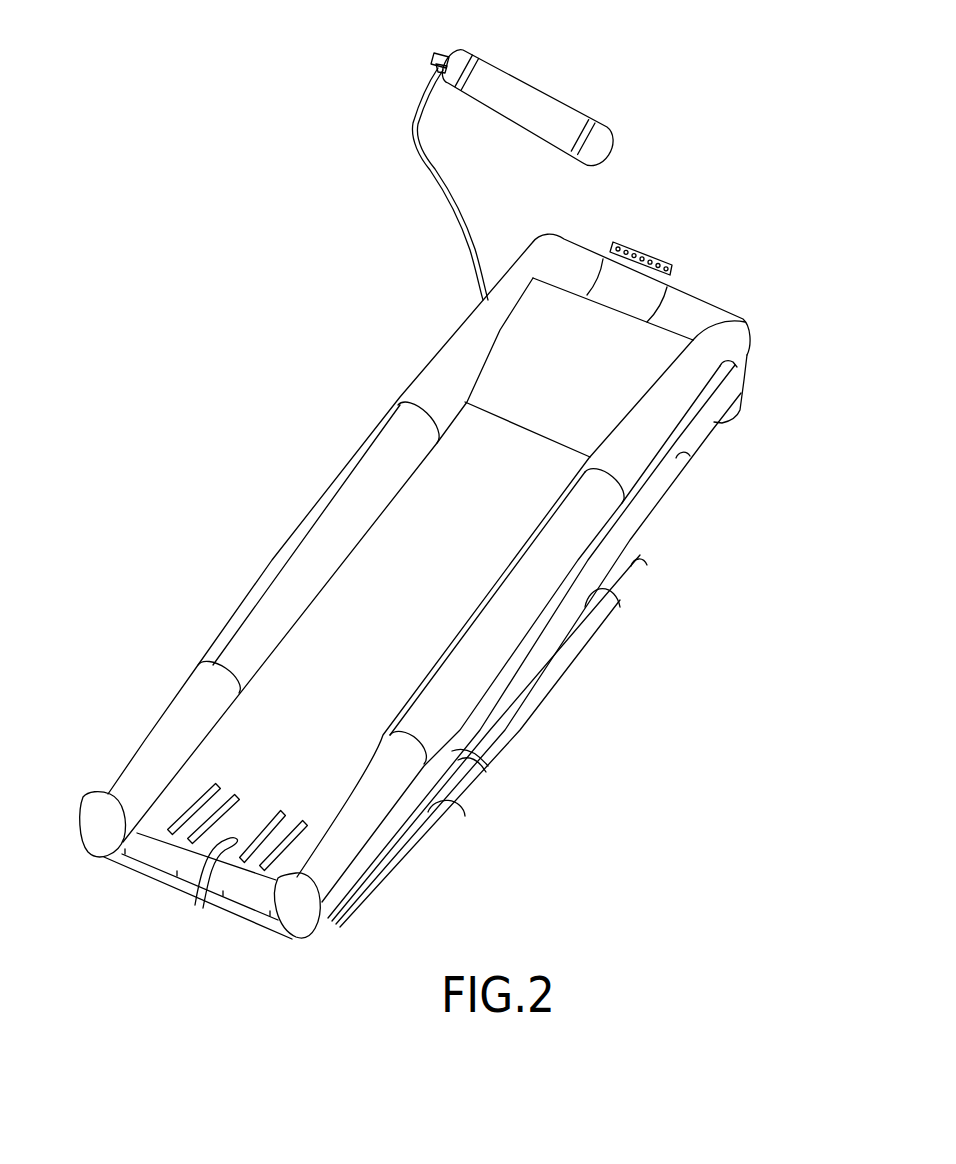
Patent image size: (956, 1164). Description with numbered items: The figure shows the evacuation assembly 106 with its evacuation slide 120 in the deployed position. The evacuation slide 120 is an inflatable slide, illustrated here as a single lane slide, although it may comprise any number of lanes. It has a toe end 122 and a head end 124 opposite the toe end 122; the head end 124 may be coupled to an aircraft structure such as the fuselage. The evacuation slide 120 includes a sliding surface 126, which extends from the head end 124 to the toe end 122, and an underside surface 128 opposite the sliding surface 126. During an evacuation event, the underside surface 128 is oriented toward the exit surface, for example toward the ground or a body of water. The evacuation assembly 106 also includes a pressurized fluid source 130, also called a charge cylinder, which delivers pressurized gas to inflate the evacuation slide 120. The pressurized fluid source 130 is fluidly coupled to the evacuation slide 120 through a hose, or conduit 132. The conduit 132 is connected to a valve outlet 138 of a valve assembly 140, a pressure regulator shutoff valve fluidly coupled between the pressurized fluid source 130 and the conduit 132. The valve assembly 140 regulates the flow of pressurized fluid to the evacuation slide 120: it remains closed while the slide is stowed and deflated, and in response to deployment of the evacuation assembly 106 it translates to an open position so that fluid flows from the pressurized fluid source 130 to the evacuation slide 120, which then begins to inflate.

The evacuation assembly 106 is at (241, 160).
The evacuation slide 120 is at (713, 282).
The toe end 122 is at (148, 876).
The head end 124 is at (598, 238).
The sliding surface 126 is at (443, 582).
The underside surface 128 is at (567, 644).
The pressurized fluid source 130 is at (538, 105).
The conduit 132 is at (448, 203).
The valve outlet 138 is at (440, 66).
The valve assembly 140 is at (447, 52).